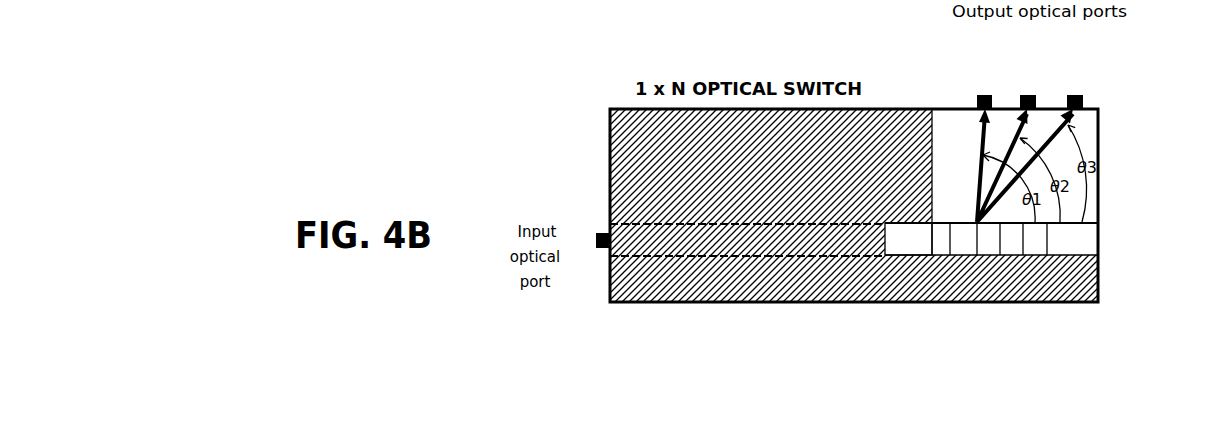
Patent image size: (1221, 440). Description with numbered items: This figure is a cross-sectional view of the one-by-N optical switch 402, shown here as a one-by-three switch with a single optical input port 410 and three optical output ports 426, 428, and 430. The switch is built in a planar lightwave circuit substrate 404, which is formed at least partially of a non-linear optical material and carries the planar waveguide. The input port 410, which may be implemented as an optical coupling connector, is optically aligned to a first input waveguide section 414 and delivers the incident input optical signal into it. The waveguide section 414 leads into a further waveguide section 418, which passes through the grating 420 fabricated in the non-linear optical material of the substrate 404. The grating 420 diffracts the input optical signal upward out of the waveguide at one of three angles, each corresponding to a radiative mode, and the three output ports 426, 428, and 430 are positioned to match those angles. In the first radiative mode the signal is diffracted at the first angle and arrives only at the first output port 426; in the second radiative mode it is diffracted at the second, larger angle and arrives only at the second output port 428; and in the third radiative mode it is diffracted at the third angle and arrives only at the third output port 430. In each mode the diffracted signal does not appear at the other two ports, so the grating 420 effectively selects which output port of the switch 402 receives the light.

The 1×N optical switch 402 is at (1150, 152).
The planar lightwave circuit substrate 404 is at (887, 138).
The optical input port 410 is at (595, 242).
The first input waveguide section 414 is at (703, 238).
The waveguide section 418 is at (897, 240).
The grating 420 is at (957, 255).
The first output port 426 is at (985, 93).
The second output port 428 is at (1032, 93).
The third output port 430 is at (1073, 93).